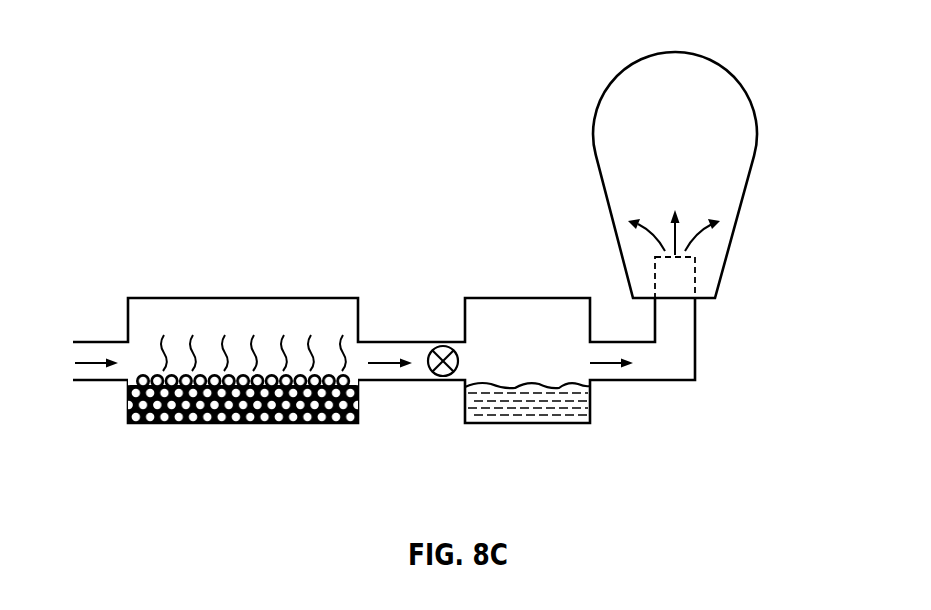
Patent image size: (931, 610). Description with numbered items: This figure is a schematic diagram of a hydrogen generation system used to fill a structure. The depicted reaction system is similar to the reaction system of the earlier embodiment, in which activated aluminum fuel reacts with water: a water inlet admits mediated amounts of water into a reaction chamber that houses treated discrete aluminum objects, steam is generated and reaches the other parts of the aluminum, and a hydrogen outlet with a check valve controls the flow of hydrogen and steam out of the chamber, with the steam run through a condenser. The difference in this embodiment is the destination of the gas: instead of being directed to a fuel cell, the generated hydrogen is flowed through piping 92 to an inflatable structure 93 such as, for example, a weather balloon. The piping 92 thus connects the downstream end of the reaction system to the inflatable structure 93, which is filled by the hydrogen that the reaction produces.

The piping 92 is at (697, 348).
The inflatable structure 93 is at (712, 238).